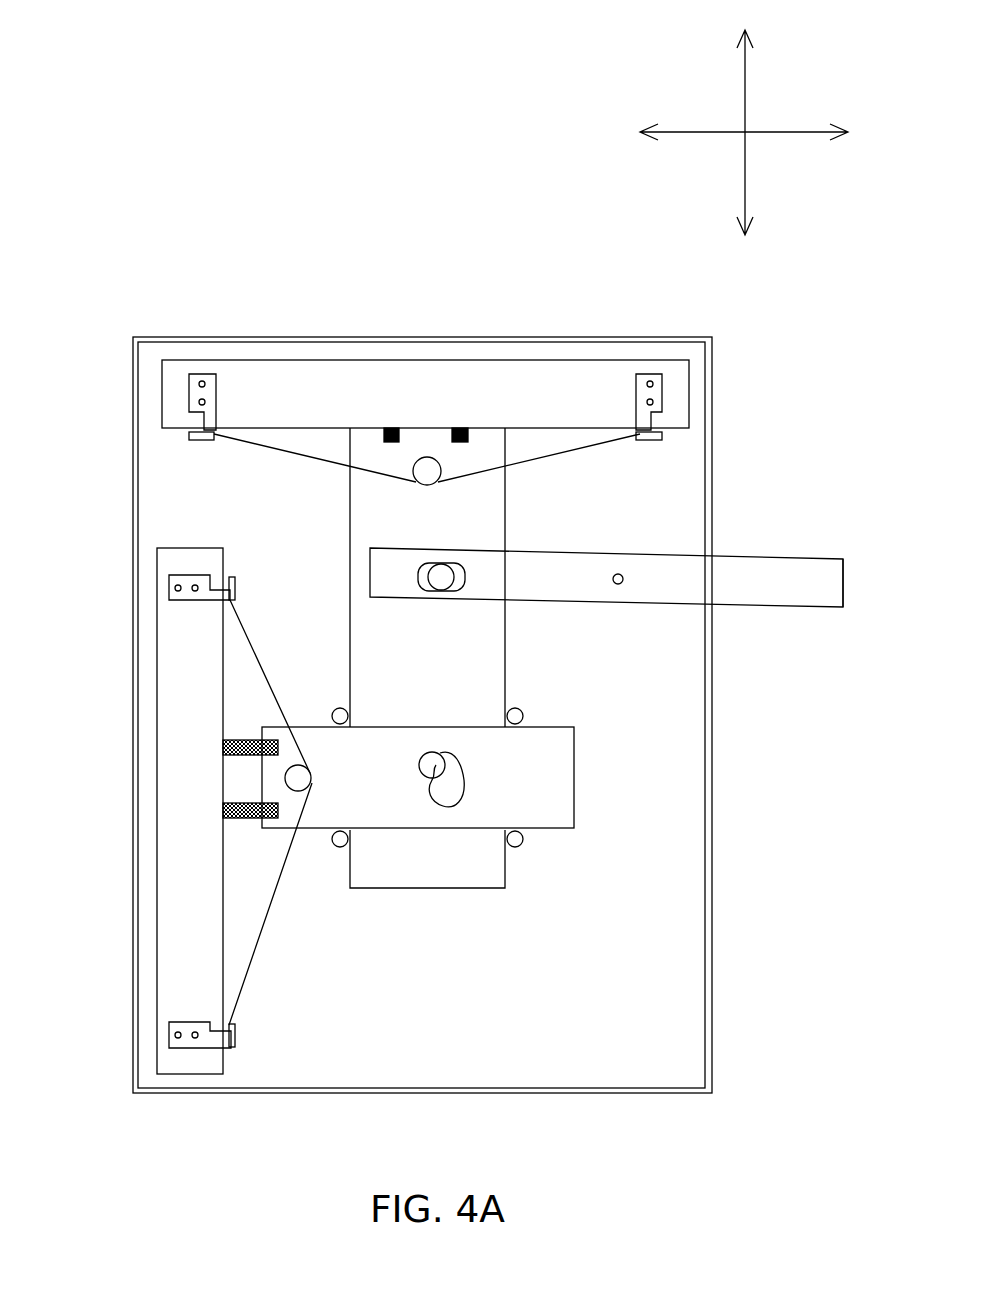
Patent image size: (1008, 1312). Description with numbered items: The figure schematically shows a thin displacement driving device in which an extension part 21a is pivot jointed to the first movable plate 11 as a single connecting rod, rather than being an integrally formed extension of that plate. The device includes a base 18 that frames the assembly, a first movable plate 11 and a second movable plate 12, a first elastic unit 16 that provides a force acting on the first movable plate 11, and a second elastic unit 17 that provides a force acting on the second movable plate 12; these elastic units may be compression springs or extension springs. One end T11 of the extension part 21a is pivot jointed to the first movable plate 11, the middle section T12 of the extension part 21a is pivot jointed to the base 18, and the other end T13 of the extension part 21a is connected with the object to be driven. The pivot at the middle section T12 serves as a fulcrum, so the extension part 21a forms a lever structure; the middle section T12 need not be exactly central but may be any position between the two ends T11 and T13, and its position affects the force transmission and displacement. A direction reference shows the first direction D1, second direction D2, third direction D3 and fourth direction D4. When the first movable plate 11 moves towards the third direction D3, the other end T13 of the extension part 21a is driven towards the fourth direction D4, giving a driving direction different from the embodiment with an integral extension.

The first movable plate 11 is at (505, 513).
The second movable plate 12 is at (565, 780).
The first elastic unit 16 is at (458, 428).
The second elastic unit 17 is at (223, 746).
The base 18 is at (152, 481).
The extension part 21a is at (746, 597).
The one end of the extension part T11 is at (405, 576).
The middle section of the extension part T12 is at (617, 592).
The other end of the extension part T13 is at (822, 580).
The first direction D1 is at (812, 132).
The second direction D2 is at (677, 132).
The third direction D3 is at (745, 66).
The fourth direction D4 is at (745, 201).